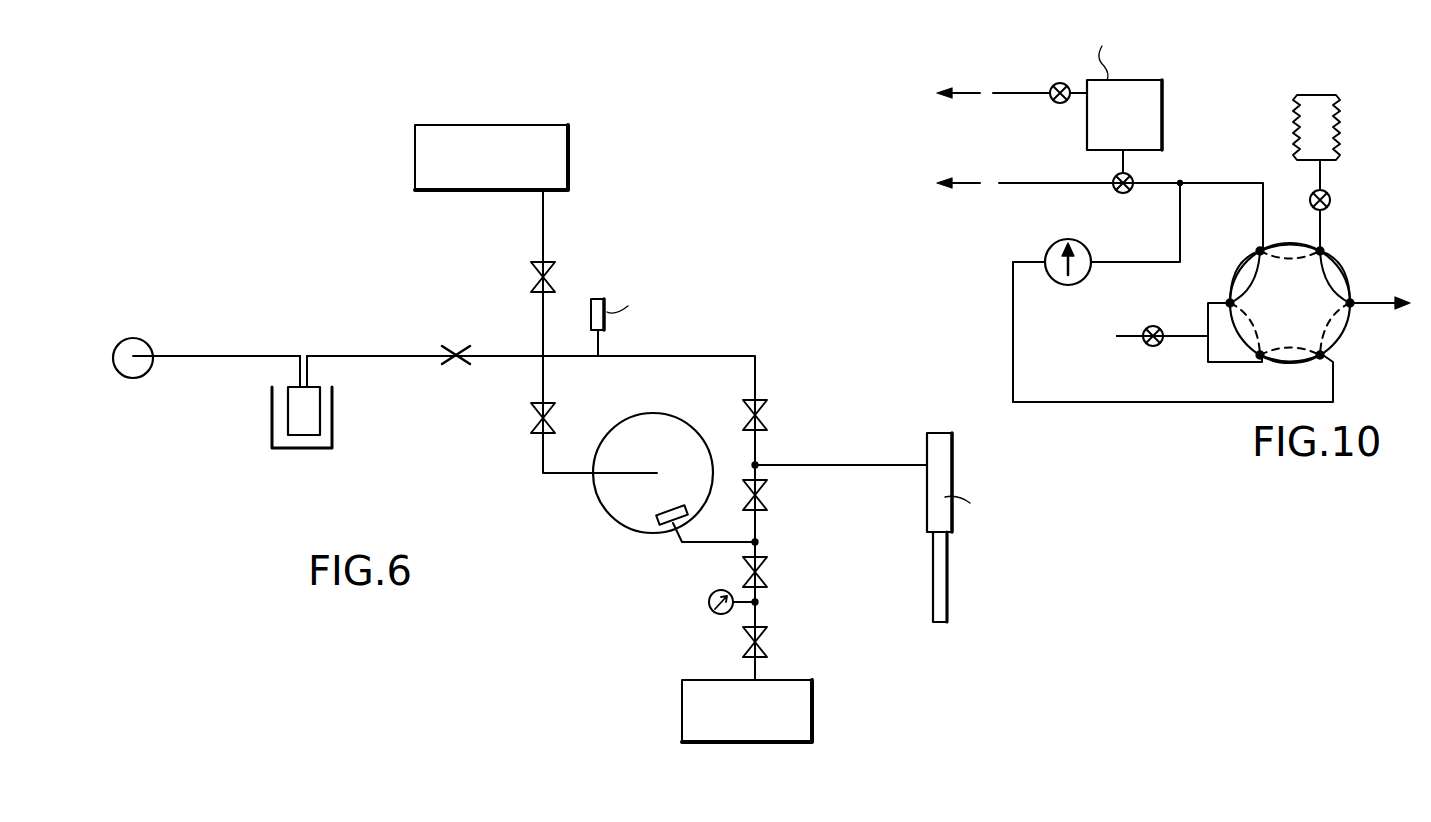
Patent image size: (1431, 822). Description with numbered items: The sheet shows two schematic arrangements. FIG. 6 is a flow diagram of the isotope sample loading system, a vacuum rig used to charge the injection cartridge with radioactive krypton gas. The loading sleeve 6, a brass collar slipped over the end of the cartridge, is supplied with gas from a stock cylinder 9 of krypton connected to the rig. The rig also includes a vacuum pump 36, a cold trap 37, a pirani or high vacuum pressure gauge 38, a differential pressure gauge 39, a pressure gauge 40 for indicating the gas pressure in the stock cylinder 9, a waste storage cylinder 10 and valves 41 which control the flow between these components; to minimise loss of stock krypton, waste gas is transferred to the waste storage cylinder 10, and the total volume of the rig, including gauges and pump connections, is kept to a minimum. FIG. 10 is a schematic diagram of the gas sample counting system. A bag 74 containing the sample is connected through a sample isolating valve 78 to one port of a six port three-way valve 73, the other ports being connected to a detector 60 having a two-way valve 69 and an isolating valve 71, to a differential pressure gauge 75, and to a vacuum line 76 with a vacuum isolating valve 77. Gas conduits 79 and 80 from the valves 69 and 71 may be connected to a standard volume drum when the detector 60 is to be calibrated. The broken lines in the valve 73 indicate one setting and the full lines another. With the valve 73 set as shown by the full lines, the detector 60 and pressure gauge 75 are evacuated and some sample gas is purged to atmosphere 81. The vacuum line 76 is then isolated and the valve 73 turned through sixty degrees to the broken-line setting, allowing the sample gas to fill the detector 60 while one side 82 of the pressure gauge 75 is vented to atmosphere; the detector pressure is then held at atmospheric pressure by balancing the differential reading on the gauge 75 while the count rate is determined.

In FIG. 6, the loading sleeve 6 is at (952, 433).
In FIG. 6, the stock cylinder 9 is at (812, 713).
In FIG. 6, the waste storage cylinder 10 is at (474, 190).
In FIG. 6, the vacuum pump 36 is at (134, 345).
In FIG. 6, the cold trap 37 is at (284, 448).
In FIG. 6, the pirani or high vacuum pressure gauge 38 is at (595, 299).
In FIG. 6, the differential pressure gauge 39 is at (648, 428).
In FIG. 6, the pressure gauge 40 is at (722, 615).
In FIG. 6, the valves 41 is at (540, 284).
In FIG. 10, the detector 60 is at (1162, 86).
In FIG. 10, the two-way valve 69 is at (1133, 173).
In FIG. 10, the isolating valve 71 is at (1058, 83).
In FIG. 10, the six port 3-way valve 73 is at (1345, 272).
In FIG. 10, the bag 74 is at (1333, 95).
In FIG. 10, the differential pressure gauge 75 is at (1088, 278).
In FIG. 10, the vacuum line 76 is at (1138, 343).
In FIG. 10, the vacuum isolating valve 77 is at (1162, 328).
In FIG. 10, the sample isolating valve 78 is at (1331, 203).
In FIG. 10, the gas conduit 79 is at (1066, 183).
In FIG. 10, the gas conduit 80 is at (1012, 93).
In FIG. 10, the atmosphere 81 is at (1380, 303).
In FIG. 10, the one side of the pressure gauge 82 is at (1026, 262).